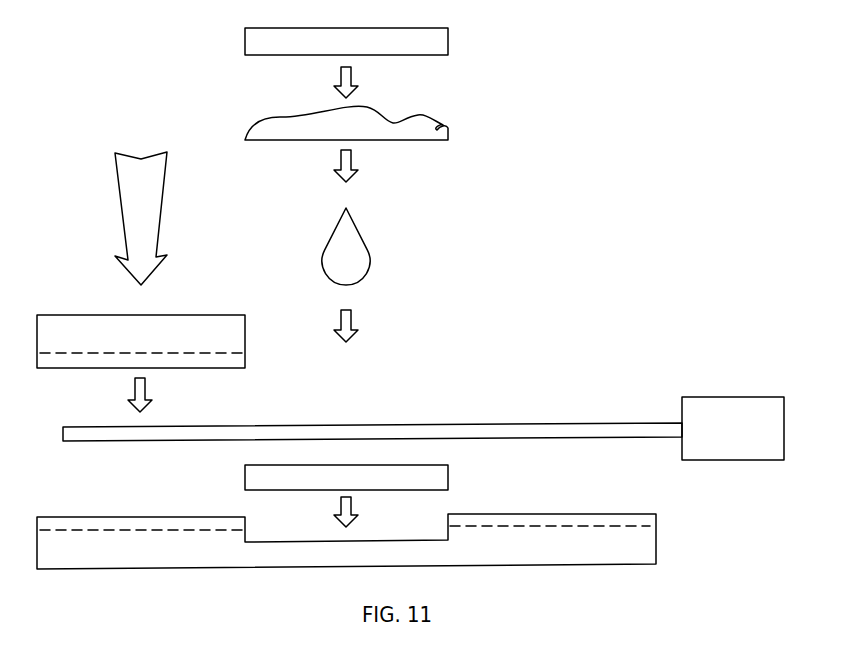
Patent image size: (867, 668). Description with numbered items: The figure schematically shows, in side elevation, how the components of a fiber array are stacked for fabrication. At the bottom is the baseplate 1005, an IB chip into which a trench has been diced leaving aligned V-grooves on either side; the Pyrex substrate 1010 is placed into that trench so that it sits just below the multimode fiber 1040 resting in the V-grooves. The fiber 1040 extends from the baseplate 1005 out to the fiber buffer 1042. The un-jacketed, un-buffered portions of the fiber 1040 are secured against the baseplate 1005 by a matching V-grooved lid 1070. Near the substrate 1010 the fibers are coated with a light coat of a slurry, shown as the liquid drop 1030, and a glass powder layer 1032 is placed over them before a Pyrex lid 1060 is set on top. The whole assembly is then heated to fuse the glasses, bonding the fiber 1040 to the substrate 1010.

The Pyrex lid 1060 is at (444, 43).
The adhesive layer 1032 is at (440, 128).
The liquid drop / adhesive droplet 1030 is at (355, 250).
The V-grooved lid 1070 is at (176, 325).
The multimode fiber 1040 is at (510, 432).
The fiber buffer 1042 is at (705, 409).
The Pyrex substrate 1010 is at (448, 472).
The baseplate 1005 is at (656, 545).